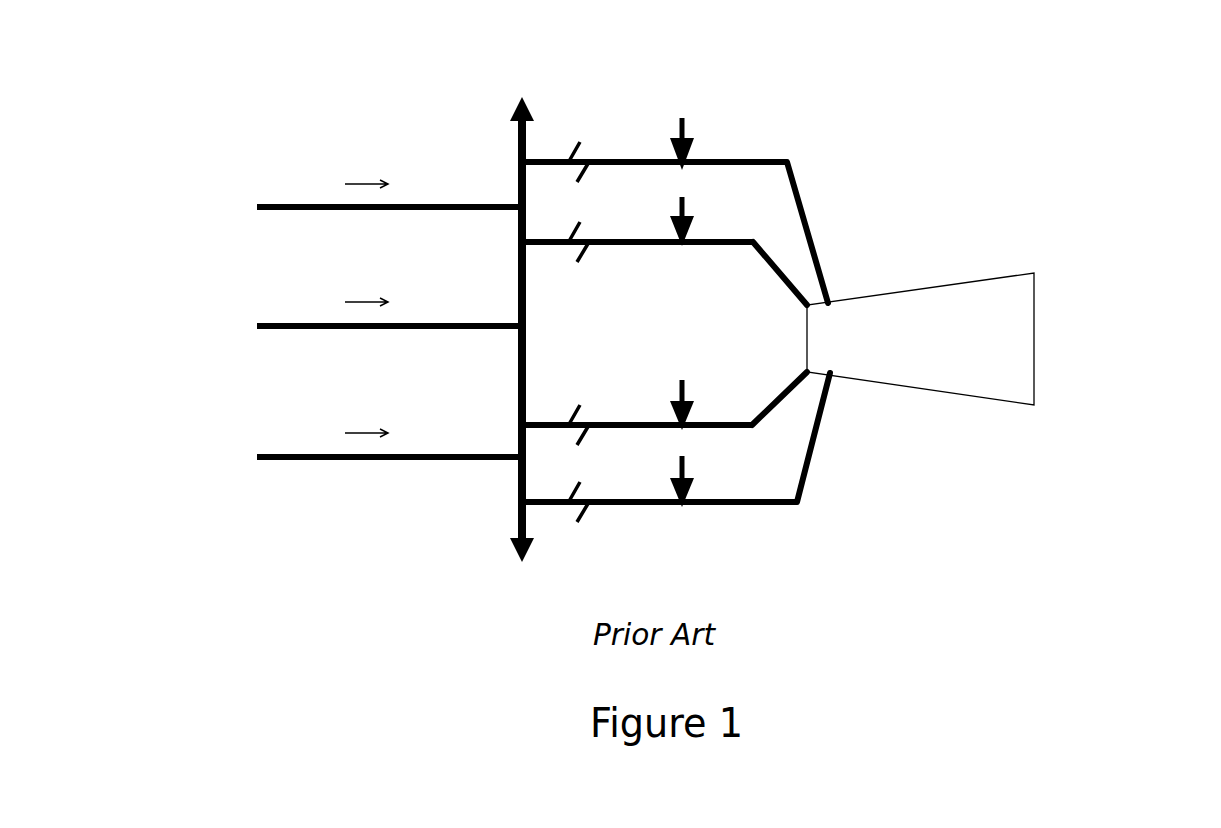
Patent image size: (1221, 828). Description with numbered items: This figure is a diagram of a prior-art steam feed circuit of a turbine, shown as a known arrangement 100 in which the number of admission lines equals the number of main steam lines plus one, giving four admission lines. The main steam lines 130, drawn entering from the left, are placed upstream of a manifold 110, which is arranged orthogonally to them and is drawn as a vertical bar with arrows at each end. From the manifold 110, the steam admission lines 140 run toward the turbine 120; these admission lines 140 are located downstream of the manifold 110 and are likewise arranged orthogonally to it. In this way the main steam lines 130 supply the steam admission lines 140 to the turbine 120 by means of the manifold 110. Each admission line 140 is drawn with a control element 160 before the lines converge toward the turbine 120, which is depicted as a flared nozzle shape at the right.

The gas turbine combustion system (prior art) 100 is at (795, 122).
The manifold 110 is at (530, 105).
The turbine 120 is at (993, 343).
The main steam lines 130 is at (257, 457).
The steam admission lines 140 is at (600, 240).
The fuel control valves 160 is at (667, 163).